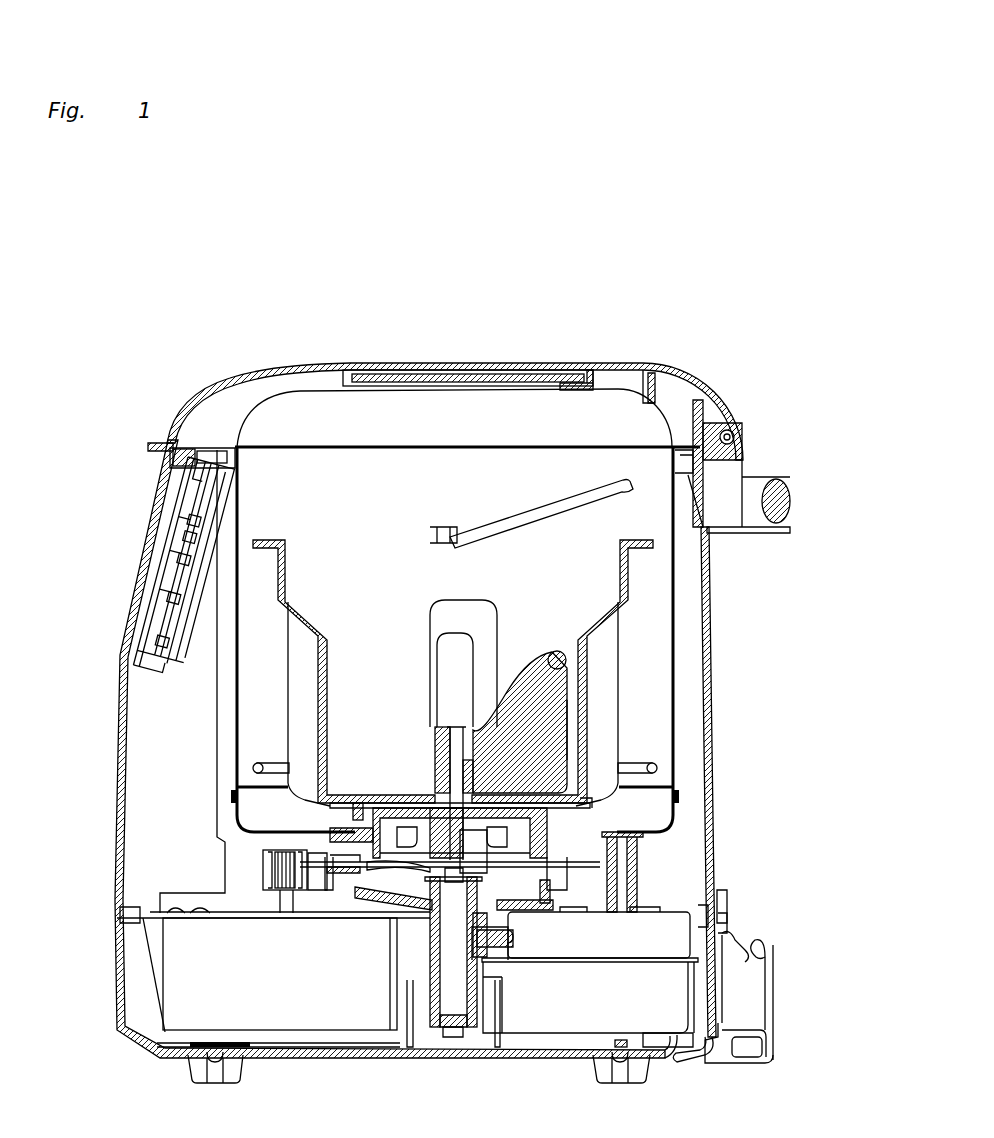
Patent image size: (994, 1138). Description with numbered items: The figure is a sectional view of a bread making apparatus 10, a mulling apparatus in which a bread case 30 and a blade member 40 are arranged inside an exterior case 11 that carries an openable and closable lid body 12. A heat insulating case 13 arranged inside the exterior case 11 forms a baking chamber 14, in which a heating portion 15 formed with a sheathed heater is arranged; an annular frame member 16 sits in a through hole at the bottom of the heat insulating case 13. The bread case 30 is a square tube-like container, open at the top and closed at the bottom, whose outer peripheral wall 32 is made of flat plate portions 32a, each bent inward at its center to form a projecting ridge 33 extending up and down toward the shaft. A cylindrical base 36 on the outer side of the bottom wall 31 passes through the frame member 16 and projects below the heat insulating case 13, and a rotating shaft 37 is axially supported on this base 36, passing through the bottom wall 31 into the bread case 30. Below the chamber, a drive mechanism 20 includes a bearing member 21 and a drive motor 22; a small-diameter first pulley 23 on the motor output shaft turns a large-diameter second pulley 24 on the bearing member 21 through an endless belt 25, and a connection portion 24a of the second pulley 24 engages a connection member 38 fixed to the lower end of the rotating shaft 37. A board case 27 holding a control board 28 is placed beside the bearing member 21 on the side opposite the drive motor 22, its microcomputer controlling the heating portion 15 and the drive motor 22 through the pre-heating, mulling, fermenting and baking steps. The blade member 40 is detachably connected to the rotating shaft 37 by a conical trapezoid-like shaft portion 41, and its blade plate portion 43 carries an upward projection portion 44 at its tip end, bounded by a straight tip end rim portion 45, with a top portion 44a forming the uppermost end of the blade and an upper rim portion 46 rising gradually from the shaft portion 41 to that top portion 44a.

The bread making apparatus 10 is at (700, 294).
The exterior case 11 is at (126, 1043).
The lid body 12 is at (298, 366).
The heat insulating case 13 is at (233, 748).
The baking chamber 14 is at (647, 657).
The heating portion 15 is at (650, 770).
The frame member 16 is at (330, 834).
The drive mechanism 20 is at (640, 840).
The bearing member 21 is at (430, 1010).
The drive motor 22 is at (278, 1005).
The first pulley 23 is at (262, 872).
The second pulley 24 is at (600, 880).
The connection portion 24a is at (402, 855).
The endless belt 25 is at (314, 880).
The board case 27 is at (713, 940).
The control board 28 is at (578, 960).
The bread case 30 is at (435, 583).
The bottom wall 31 is at (405, 803).
The outer peripheral wall 32 is at (385, 560).
The flat plate portion 32a is at (268, 574).
The projecting ridge 33 is at (455, 640).
The base 36 is at (358, 803).
The rotating shaft 37 is at (458, 775).
The connection member 38 is at (400, 838).
The blade member 40 is at (642, 679).
The shaft portion 41 is at (447, 735).
The blade plate portion 43 is at (577, 750).
The projection portion 44 is at (527, 685).
The top portion 44a is at (553, 650).
The tip end rim portion 45 is at (569, 728).
The upper rim portion 46 is at (497, 670).